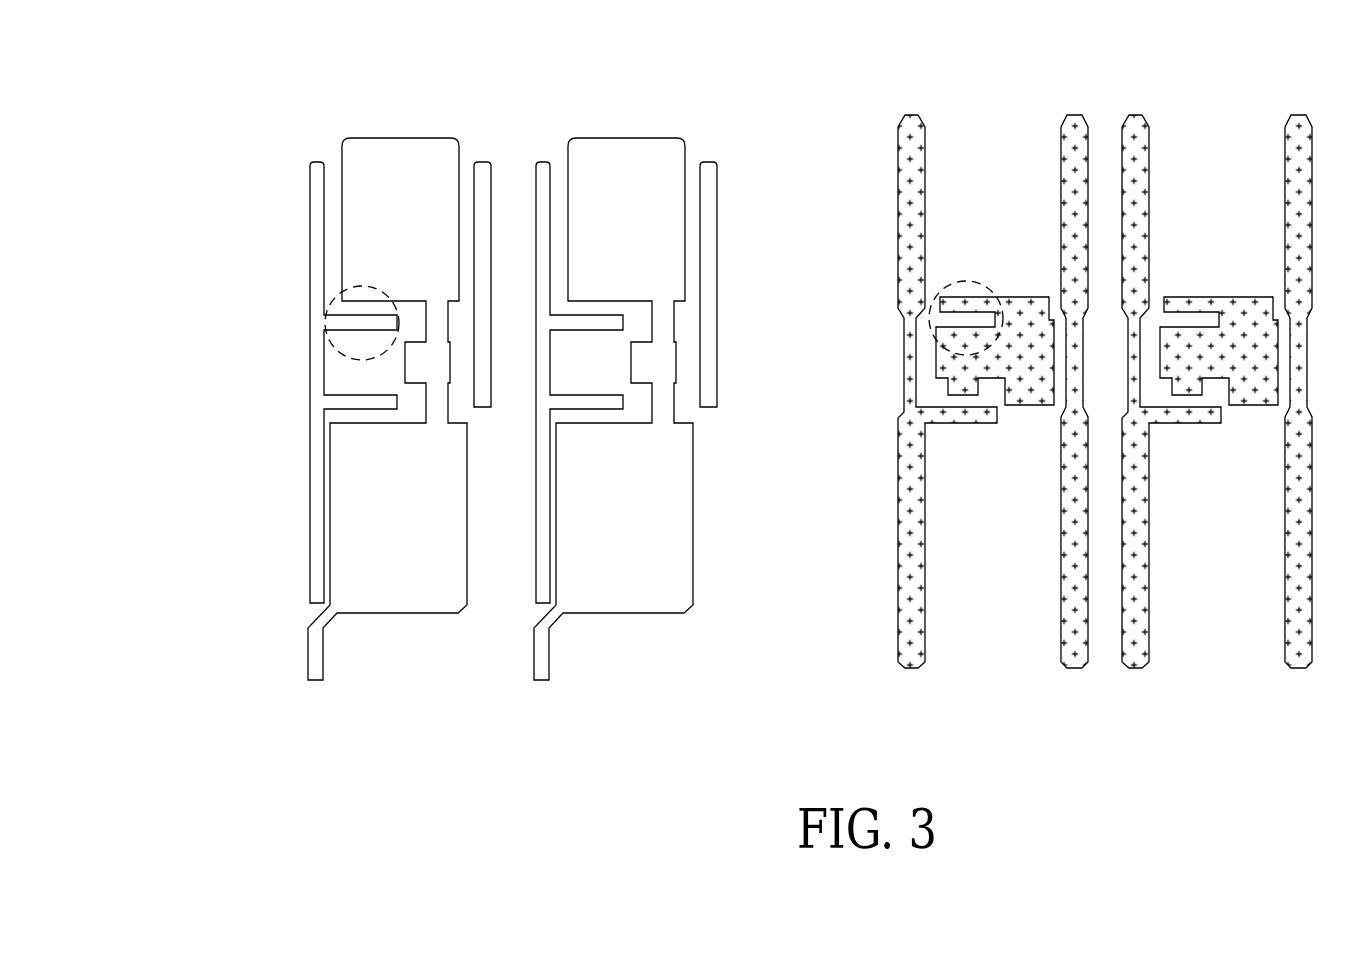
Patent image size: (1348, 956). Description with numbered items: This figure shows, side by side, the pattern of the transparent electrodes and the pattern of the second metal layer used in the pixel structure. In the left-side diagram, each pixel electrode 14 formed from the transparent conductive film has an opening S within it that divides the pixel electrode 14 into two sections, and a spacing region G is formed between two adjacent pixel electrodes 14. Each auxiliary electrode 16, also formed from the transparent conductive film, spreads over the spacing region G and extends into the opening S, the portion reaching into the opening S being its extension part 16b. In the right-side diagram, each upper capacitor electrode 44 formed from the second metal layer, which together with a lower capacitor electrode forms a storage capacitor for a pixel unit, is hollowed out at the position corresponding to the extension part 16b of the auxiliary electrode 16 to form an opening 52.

The pixel electrode 14 is at (397, 139).
The auxiliary electrode 16 is at (312, 163).
The extension part 16b is at (323, 313).
The opening S is at (606, 366).
The spacing region G is at (506, 531).
The opening 52 is at (928, 316).
The upper capacitor electrode 44 is at (1008, 297).